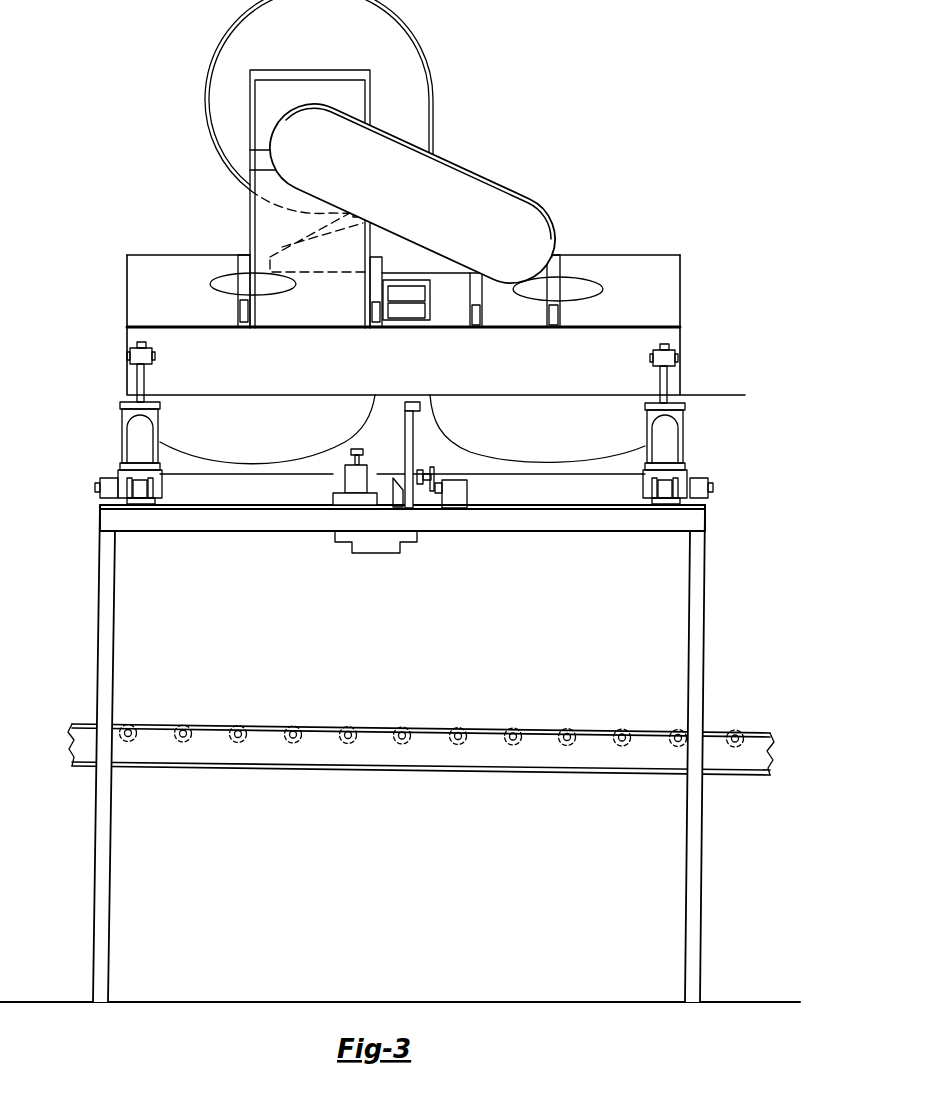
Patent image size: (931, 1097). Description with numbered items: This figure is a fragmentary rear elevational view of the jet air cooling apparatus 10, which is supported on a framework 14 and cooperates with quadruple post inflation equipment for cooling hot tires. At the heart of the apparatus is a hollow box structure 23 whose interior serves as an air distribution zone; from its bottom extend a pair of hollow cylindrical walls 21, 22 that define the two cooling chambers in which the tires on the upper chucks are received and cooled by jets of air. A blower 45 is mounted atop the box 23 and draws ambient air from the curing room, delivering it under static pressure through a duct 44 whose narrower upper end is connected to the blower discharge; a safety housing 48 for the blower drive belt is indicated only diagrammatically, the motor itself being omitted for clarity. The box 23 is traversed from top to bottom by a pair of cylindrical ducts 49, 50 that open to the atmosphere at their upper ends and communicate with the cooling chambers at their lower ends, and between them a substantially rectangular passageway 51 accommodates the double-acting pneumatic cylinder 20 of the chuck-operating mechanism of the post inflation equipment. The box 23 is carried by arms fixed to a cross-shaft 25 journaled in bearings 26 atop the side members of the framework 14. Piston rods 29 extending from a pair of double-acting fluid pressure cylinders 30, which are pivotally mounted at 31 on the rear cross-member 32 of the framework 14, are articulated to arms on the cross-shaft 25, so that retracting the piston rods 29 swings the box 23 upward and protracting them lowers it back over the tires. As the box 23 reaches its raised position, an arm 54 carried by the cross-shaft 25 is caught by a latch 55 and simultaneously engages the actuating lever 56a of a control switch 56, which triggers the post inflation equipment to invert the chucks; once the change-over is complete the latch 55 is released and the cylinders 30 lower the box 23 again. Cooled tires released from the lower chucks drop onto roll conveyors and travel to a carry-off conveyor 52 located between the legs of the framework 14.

The jet air cooling apparatus 10 is at (110, 352).
The framework 14 is at (400, 753).
The double-acting pneumatic cylinder 20 is at (407, 320).
The hollow cylindrical wall 21 is at (540, 459).
The hollow cylindrical wall 22 is at (233, 461).
The hollow box structure 23 is at (678, 297).
The cross-shaft 25 is at (575, 508).
The bearings 26 is at (103, 494).
The piston rods 29 is at (143, 378).
The double-acting fluid pressure cylinders 30 is at (133, 437).
The pivotal mounting 31 is at (143, 498).
The rear cross-member 32 is at (243, 529).
The duct 44 is at (518, 210).
The blower 45 is at (424, 118).
The safety housing 48 is at (463, 190).
The cylindrical duct 49 is at (572, 297).
The cylindrical duct 50 is at (222, 284).
The rectangular passageway 51 is at (437, 298).
The carry-off conveyor 52 is at (379, 737).
The arm 54 is at (413, 432).
The latch 55 is at (400, 478).
The control switch 56 is at (457, 508).
The actuating lever 56a is at (432, 482).